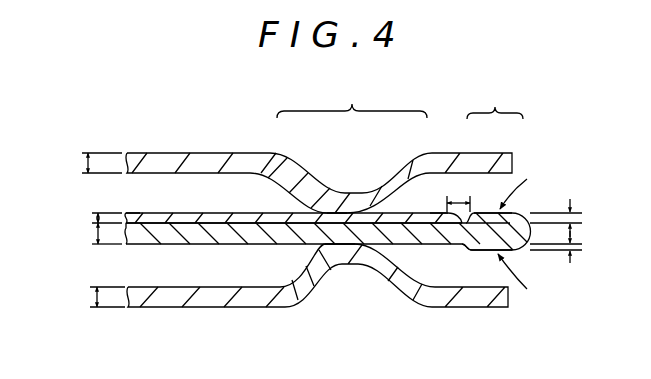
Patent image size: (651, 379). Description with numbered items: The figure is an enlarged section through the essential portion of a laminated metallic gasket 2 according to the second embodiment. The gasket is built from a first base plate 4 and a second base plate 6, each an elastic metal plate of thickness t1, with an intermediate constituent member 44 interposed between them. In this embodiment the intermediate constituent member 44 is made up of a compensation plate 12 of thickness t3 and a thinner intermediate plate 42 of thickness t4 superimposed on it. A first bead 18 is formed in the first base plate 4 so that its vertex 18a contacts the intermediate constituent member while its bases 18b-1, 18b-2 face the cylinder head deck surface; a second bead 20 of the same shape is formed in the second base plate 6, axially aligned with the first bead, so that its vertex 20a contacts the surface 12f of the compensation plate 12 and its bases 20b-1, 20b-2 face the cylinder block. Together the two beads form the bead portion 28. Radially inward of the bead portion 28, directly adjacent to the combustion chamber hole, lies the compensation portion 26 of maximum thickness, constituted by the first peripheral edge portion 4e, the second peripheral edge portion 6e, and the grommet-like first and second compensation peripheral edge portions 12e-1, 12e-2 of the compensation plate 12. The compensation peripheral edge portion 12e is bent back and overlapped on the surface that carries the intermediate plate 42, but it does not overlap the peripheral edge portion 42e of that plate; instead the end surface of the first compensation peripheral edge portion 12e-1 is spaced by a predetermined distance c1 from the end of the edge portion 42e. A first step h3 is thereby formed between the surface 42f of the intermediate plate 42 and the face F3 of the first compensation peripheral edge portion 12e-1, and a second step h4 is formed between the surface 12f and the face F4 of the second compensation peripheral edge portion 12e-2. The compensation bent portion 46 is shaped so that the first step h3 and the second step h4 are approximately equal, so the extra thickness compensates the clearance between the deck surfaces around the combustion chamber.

The laminated metallic gasket 2 is at (167, 104).
The first base plate 4 is at (161, 151).
The second base plate 6 is at (190, 311).
The compensation plate 12 is at (238, 249).
The intermediate plate 42 is at (222, 210).
The intermediate constituent member 44 is at (113, 204).
The first bead 18 is at (373, 197).
The vertex of the first bead 18a is at (338, 215).
The base of the first bead 18b-1 is at (412, 151).
The base of the first bead 18b-2 is at (287, 151).
The second bead 20 is at (387, 272).
The vertex of the second bead 20a is at (332, 245).
The base of the second bead 20b-1 is at (407, 310).
The base of the second bead 20b-2 is at (292, 311).
The bead portion 28 is at (343, 147).
The compensation portion 26 is at (476, 128).
The first peripheral edge portion 4e is at (494, 162).
The second peripheral edge portion 6e is at (497, 302).
The peripheral edge portion of the intermediate plate 42e is at (421, 209).
The surface of the intermediate plate 42f is at (138, 210).
The compensation peripheral edge portion 12e is at (531, 230).
The first compensation peripheral edge portion 12e-1 is at (513, 211).
The second compensation peripheral edge portion 12e-2 is at (510, 251).
The surface of the compensation plate 12f is at (138, 249).
The compensation bent portion 46 is at (465, 250).
The plate thickness t1 is at (84, 162).
The plate thickness t3 is at (92, 238).
The plate thickness t4 is at (92, 221).
The first step h3 is at (564, 212).
The second step h4 is at (564, 255).
The predetermined distance c1 is at (458, 197).
The face of the first compensation peripheral edge portion F3 is at (524, 183).
The face of the second compensation peripheral edge portion F4 is at (523, 282).